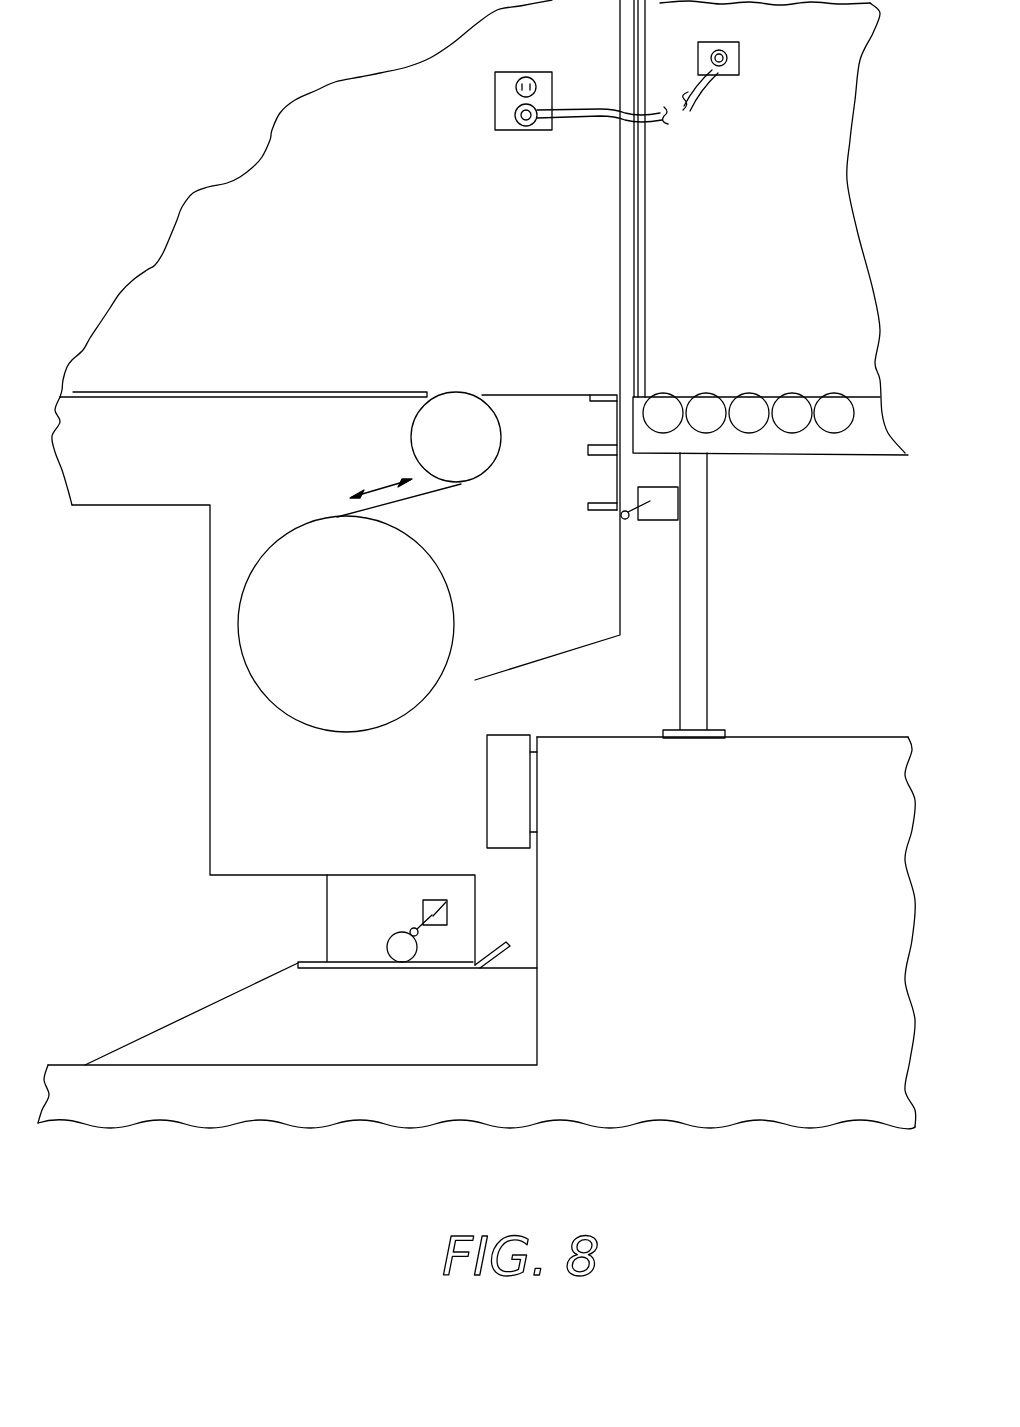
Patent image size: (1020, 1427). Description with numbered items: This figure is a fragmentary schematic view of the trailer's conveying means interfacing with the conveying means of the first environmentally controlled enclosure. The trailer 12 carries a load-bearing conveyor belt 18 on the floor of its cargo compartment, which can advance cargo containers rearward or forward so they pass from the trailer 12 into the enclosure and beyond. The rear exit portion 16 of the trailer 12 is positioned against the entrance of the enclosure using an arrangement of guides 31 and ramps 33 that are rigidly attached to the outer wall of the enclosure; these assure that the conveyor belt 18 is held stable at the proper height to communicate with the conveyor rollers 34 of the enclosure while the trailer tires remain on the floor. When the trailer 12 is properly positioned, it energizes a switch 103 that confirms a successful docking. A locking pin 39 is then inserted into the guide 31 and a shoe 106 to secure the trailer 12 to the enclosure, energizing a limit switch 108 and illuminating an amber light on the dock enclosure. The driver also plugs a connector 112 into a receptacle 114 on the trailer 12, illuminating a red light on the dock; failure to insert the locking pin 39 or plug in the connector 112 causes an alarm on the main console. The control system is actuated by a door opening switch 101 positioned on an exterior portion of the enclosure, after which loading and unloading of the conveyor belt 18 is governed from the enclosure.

The trailer 12 is at (362, 216).
The rear exit portion 16 is at (618, 250).
The conveyor belt 18 is at (213, 392).
The guide 31 is at (307, 962).
The ramp 33 is at (203, 1012).
The conveyor rollers 34 is at (705, 397).
The locking pin 39 is at (400, 955).
The door opening switch 101 is at (649, 205).
The switch 103 is at (672, 522).
The shoe 106 is at (465, 922).
The limit switch 108 is at (424, 900).
The connector 112 is at (668, 117).
The receptacle 114 is at (498, 91).